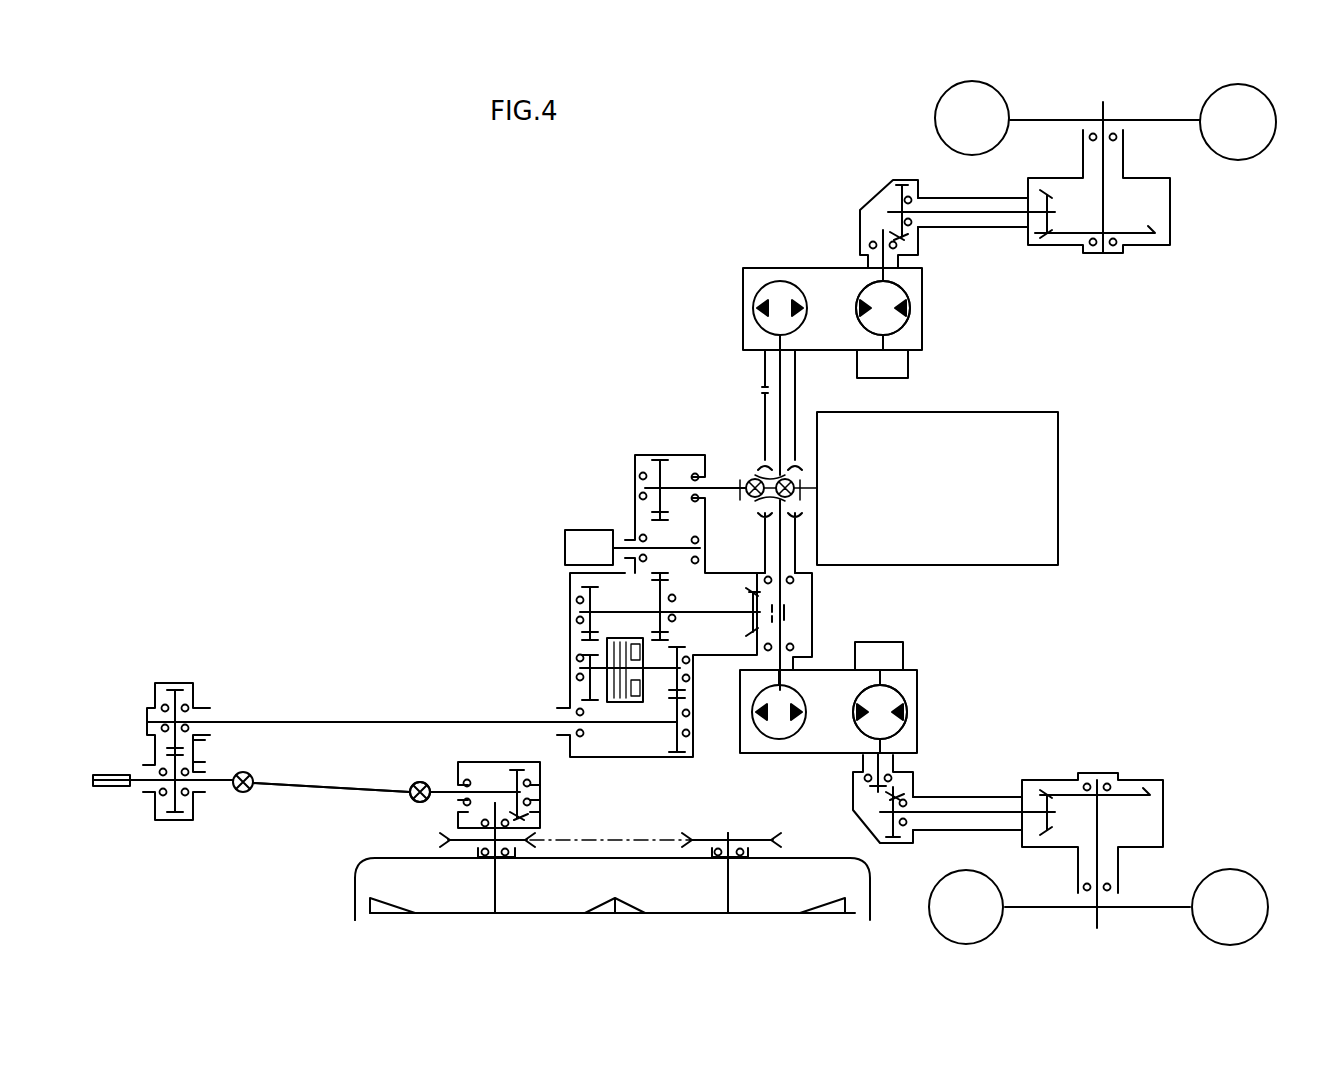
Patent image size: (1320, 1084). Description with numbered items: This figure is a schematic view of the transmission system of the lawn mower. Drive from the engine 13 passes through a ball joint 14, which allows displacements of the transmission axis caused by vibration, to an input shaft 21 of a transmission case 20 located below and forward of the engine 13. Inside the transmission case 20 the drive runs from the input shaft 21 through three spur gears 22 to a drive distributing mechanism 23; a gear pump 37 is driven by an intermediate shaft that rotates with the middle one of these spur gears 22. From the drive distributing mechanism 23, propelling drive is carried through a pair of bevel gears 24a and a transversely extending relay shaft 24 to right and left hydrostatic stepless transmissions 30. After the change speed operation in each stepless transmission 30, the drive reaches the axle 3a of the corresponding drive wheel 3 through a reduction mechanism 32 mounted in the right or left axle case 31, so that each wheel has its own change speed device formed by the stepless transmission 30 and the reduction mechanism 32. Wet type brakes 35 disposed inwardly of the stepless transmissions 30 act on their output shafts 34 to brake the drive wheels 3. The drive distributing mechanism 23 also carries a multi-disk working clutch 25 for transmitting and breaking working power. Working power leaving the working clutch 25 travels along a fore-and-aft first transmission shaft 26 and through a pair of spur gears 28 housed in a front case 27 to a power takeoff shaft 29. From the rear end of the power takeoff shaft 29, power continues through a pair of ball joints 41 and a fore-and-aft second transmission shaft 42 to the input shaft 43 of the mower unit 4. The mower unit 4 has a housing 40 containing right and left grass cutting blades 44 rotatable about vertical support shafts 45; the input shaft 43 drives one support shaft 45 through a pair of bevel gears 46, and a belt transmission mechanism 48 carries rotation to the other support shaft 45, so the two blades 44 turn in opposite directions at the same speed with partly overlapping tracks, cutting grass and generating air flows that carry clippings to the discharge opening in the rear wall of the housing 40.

The drive wheel 3 is at (957, 115).
The axle 3a is at (1100, 108).
The mower unit 4 is at (338, 895).
The engine 13 is at (1040, 457).
The ball joint 14 is at (752, 470).
The transmission case 20 is at (570, 636).
The input shaft 21 is at (723, 487).
The spur gear 22 is at (660, 468).
The drive distributing mechanism 23 is at (620, 582).
The relay shaft 24 is at (762, 388).
The bevel gear 24a is at (838, 608).
The working clutch 25 is at (893, 372).
The first transmission shaft 26 is at (302, 720).
The front case 27 is at (166, 666).
The spur gear 28 is at (192, 763).
The power takeoff shaft 29 is at (222, 788).
The hydrostatic stepless transmission 30 is at (941, 296).
The axle case 31 is at (965, 228).
The reduction mechanism 32 is at (1147, 219).
The output shaft 34 is at (900, 340).
The wet type brake 35 is at (893, 648).
The gear pump 37 is at (578, 535).
The housing 40 is at (795, 858).
The ball joint 41 is at (243, 794).
The second transmission shaft 42 is at (315, 795).
The input shaft 43 is at (442, 790).
The grass cutting blade 44 is at (385, 903).
The support shaft 45 is at (498, 885).
The bevel gear 46 is at (495, 790).
The belt transmission mechanism 48 is at (654, 838).